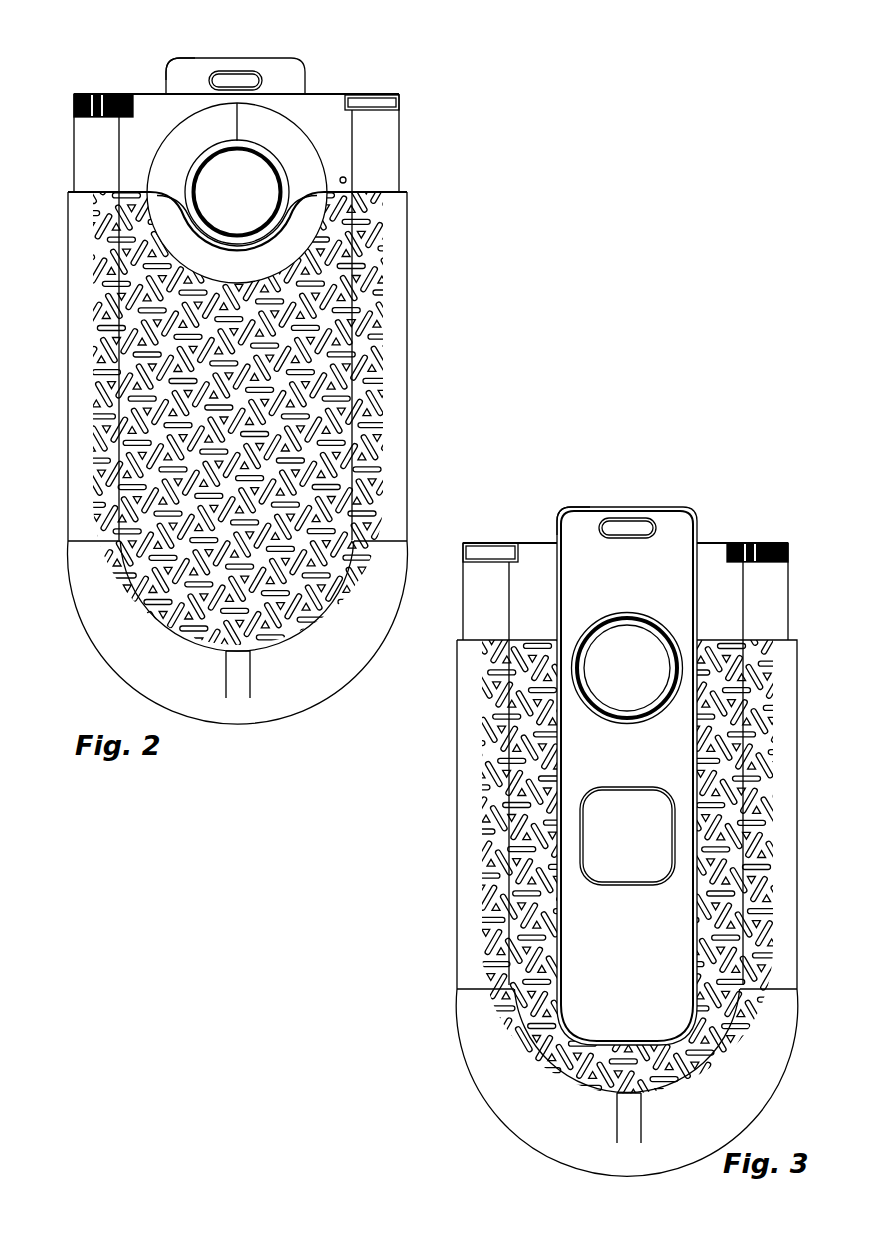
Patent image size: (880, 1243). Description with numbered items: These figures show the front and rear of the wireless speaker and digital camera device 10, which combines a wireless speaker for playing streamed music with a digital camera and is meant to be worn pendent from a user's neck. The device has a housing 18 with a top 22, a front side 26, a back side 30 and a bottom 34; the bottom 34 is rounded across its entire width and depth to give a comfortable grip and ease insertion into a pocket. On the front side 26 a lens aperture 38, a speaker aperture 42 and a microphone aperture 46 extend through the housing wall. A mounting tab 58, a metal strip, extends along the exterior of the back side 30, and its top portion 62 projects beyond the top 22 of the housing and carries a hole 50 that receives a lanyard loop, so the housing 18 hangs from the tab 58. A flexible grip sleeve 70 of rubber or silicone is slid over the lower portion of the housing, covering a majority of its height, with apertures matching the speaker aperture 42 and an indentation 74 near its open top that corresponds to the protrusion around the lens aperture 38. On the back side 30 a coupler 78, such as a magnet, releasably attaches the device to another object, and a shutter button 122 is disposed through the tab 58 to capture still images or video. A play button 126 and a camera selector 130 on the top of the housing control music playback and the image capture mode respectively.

In FIG. 2, the wireless speaker and digital camera device 10 is at (229, 469).
In FIG. 3, the wireless speaker and digital camera device 10 is at (552, 824).
In FIG. 2, the housing 18 is at (392, 148).
In FIG. 3, the housing 18 is at (772, 608).
In FIG. 2, the top 22 is at (320, 93).
In FIG. 3, the top 22 is at (535, 542).
In FIG. 2, the front side 26 is at (88, 150).
In FIG. 3, the back side 30 is at (482, 615).
In FIG. 2, the bottom 34 is at (155, 663).
In FIG. 3, the bottom 34 is at (565, 1118).
In FIG. 2, the lens aperture 38 is at (192, 183).
In FIG. 2, the speaker aperture 42 is at (217, 558).
In FIG. 2, the microphone aperture 46 is at (350, 180).
In FIG. 2, the hole 50 is at (238, 69).
In FIG. 3, the hole 50 is at (627, 519).
In FIG. 2, the mounting tab 58 is at (283, 58).
In FIG. 3, the mounting tab 58 is at (688, 507).
In FIG. 2, the top portion 62 is at (186, 60).
In FIG. 3, the top portion 62 is at (577, 506).
In FIG. 2, the grip sleeve 70 is at (400, 405).
In FIG. 3, the grip sleeve 70 is at (465, 860).
In FIG. 2, the indentation 74 is at (193, 237).
In FIG. 3, the coupler 78 is at (608, 682).
In FIG. 3, the shutter button 122 is at (610, 854).
In FIG. 2, the play button 126 is at (375, 93).
In FIG. 3, the play button 126 is at (482, 541).
In FIG. 2, the camera selector 130 is at (106, 92).
In FIG. 3, the camera selector 130 is at (765, 541).